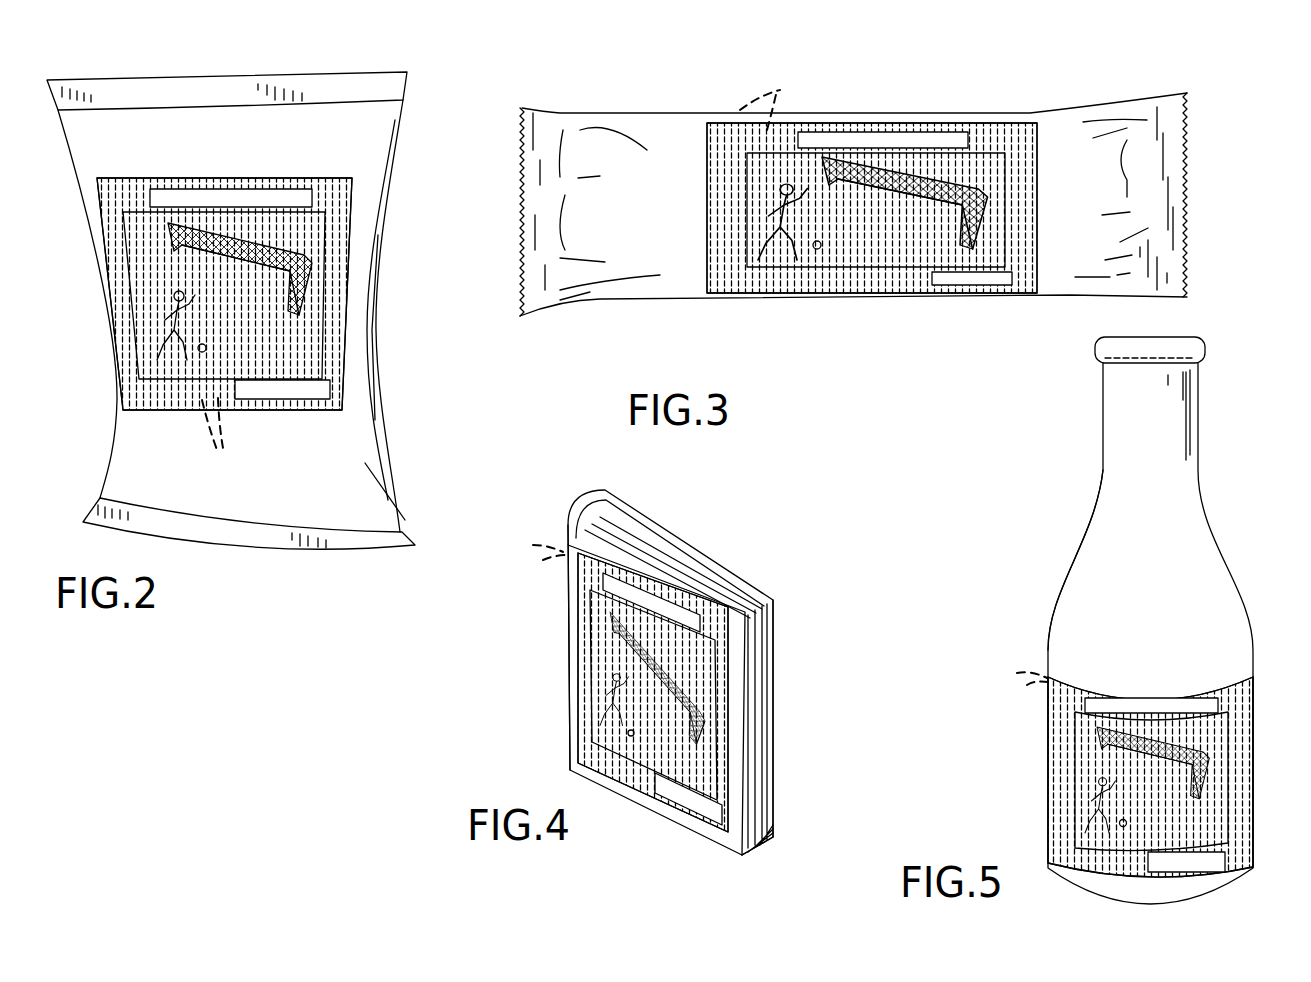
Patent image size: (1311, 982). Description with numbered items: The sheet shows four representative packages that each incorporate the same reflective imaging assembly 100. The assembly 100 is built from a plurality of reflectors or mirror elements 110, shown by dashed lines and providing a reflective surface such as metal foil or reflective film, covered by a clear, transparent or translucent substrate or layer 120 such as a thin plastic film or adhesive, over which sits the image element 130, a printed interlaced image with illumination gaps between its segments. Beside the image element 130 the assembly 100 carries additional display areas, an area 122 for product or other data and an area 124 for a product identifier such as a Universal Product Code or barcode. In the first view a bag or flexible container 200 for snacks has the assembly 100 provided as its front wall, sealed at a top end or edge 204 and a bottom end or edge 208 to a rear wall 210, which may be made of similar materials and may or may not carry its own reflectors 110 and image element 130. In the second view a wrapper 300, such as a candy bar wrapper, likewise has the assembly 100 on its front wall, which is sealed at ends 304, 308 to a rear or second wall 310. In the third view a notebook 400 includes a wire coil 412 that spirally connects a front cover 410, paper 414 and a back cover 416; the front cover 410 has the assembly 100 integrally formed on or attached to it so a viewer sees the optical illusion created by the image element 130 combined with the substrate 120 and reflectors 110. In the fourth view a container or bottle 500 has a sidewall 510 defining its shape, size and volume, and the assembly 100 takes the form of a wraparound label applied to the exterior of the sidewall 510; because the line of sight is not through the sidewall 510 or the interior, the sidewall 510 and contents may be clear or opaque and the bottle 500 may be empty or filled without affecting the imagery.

In FIG. 2, the reflective imaging assembly 100 is at (98, 178).
In FIG. 3, the reflective imaging assembly 100 is at (798, 300).
In FIG. 4, the reflective imaging assembly 100 is at (630, 580).
In FIG. 5, the reflective imaging assembly 100 is at (1046, 735).
In FIG. 2, the reflectors or mirror elements 110 is at (219, 442).
In FIG. 3, the reflectors or mirror elements 110 is at (780, 99).
In FIG. 4, the reflectors or mirror elements 110 is at (535, 540).
In FIG. 5, the reflectors or mirror elements 110 is at (1016, 666).
In FIG. 2, the substrate or layer 120 is at (115, 240).
In FIG. 3, the substrate or layer 120 is at (717, 160).
In FIG. 4, the substrate or layer 120 is at (583, 742).
In FIG. 5, the substrate or layer 120 is at (1058, 760).
In FIG. 2, the graphics or information display area 122 is at (312, 196).
In FIG. 3, the graphics or information display area 122 is at (968, 142).
In FIG. 4, the graphics or information display area 122 is at (697, 630).
In FIG. 5, the graphics or information display area 122 is at (1225, 698).
In FIG. 2, the product identifier area 124 is at (330, 388).
In FIG. 3, the product identifier area 124 is at (988, 286).
In FIG. 4, the product identifier area 124 is at (707, 822).
In FIG. 5, the product identifier area 124 is at (1193, 860).
In FIG. 2, the image element 130 is at (135, 345).
In FIG. 3, the image element 130 is at (895, 270).
In FIG. 4, the image element 130 is at (633, 757).
In FIG. 5, the image element 130 is at (1075, 803).
In FIG. 2, the bag or flexible container 200 is at (92, 70).
In FIG. 2, the top end or edge 204 is at (403, 88).
In FIG. 2, the bottom end or edge 208 is at (400, 537).
In FIG. 2, the rear wall 210 is at (353, 340).
In FIG. 3, the wrapper 300 is at (1197, 83).
In FIG. 3, the first end of wrapper 304 is at (518, 250).
In FIG. 3, the second end of wrapper 308 is at (1173, 147).
In FIG. 3, the rear or second wall 310 is at (1055, 128).
In FIG. 4, the notebook 400 is at (572, 487).
In FIG. 4, the front cover 410 is at (668, 555).
In FIG. 4, the wire coil 412 is at (568, 652).
In FIG. 4, the paper 414 is at (757, 800).
In FIG. 4, the back cover 416 is at (775, 627).
In FIG. 5, the container or bottle 500 is at (1052, 500).
In FIG. 5, the sidewall 510 is at (1070, 577).